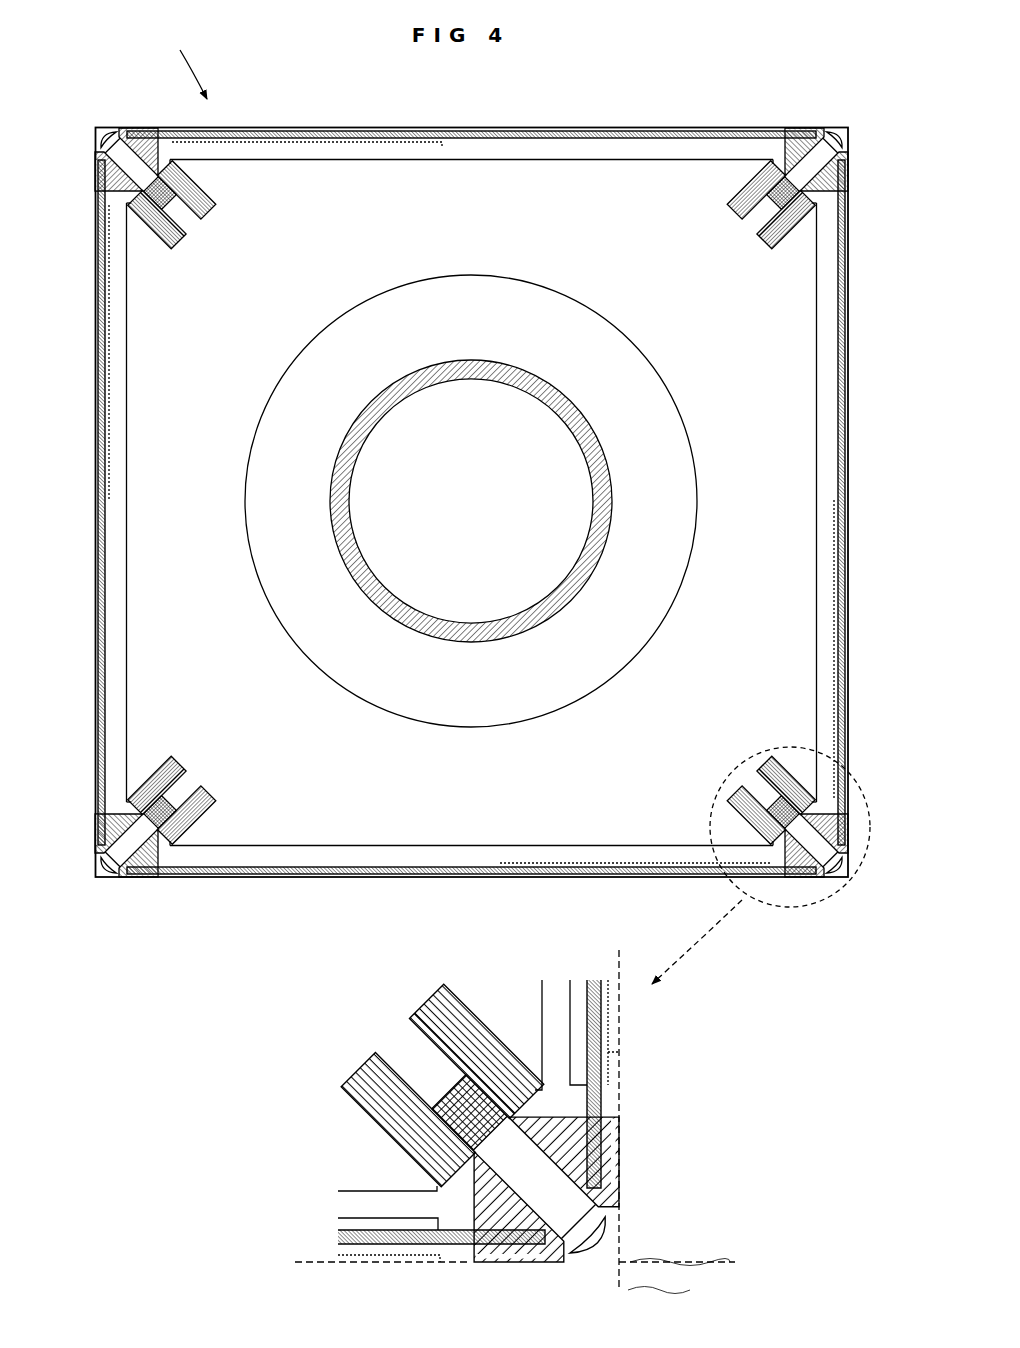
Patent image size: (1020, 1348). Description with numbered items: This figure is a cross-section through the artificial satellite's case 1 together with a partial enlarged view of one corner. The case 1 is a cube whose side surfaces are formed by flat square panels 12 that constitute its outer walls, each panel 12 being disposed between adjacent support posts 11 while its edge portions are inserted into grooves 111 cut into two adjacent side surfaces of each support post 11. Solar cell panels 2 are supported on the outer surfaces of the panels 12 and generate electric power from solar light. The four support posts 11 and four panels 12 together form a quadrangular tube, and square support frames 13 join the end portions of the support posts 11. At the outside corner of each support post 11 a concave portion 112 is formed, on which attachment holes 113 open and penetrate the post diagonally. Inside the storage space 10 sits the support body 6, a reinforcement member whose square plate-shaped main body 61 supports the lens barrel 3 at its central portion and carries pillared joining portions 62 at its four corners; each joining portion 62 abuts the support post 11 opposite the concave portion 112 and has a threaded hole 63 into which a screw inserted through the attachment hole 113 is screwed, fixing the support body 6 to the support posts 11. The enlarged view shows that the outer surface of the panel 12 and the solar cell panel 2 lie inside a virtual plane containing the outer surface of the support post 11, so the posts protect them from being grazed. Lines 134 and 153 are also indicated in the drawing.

The case 1 is at (572, 116).
The solar cell panel 2 is at (242, 132).
The lens barrel 3 is at (303, 450).
The support body 6 is at (308, 152).
The storage space 10 is at (534, 236).
The support post 11 is at (471, 669).
The panel 12 is at (330, 134).
The support frame 13 is at (610, 147).
The main body 61 is at (633, 848).
The joining portion 62 is at (216, 204).
The threaded hole 63 is at (197, 228).
The groove 111 is at (121, 137).
The concave portion 112 is at (98, 127).
The attachment hole 113 is at (120, 190).
The inner edge 134 is at (487, 158).
The dotted line 153 is at (400, 142).